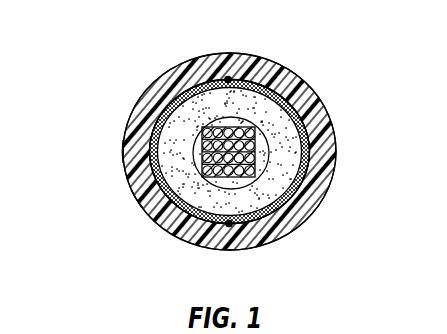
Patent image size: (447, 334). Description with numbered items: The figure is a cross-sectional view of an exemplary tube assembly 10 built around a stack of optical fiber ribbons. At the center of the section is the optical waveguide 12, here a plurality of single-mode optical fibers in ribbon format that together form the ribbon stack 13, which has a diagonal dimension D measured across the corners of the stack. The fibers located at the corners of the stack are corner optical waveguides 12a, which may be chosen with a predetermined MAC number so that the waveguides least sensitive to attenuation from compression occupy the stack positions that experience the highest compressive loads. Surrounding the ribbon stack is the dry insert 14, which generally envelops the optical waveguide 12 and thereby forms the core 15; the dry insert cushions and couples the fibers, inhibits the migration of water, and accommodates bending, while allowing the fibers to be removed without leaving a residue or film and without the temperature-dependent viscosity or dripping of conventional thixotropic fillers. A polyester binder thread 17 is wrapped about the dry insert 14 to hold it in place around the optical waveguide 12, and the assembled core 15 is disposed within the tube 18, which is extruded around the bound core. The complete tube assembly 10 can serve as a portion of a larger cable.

The tube assembly 10 is at (140, 62).
The optical waveguide 12 is at (247, 136).
The corner optical waveguide 12a is at (265, 168).
The ribbon stack 13 is at (262, 88).
The dry insert 14 is at (330, 171).
The core 15 is at (138, 204).
The polyester binder thread 17 is at (228, 79).
The tube 18 is at (122, 152).
The diagonal dimension D is at (297, 128).